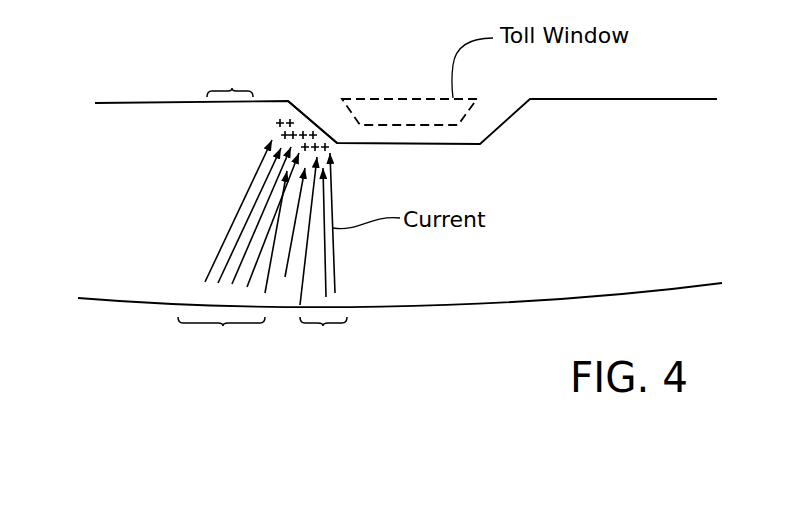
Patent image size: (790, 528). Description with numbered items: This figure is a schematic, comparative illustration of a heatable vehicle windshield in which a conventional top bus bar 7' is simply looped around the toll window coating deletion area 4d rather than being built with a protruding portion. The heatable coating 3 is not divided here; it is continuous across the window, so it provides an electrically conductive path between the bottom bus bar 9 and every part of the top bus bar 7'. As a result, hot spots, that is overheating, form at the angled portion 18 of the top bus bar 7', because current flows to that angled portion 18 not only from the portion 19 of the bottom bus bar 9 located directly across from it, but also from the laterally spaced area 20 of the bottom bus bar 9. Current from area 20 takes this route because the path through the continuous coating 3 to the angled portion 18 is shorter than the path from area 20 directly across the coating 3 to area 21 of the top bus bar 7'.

The top bus bar 7' is at (406, 76).
The angled portion 18 is at (310, 117).
The area 21 is at (232, 88).
The toll window coating deletion area 4d is at (398, 107).
The laterally spaced area 20 is at (223, 326).
The portion of the bottom bus bar 19 is at (323, 326).
The bottom bus bar 9 is at (112, 302).
The coating 3 is at (140, 205).